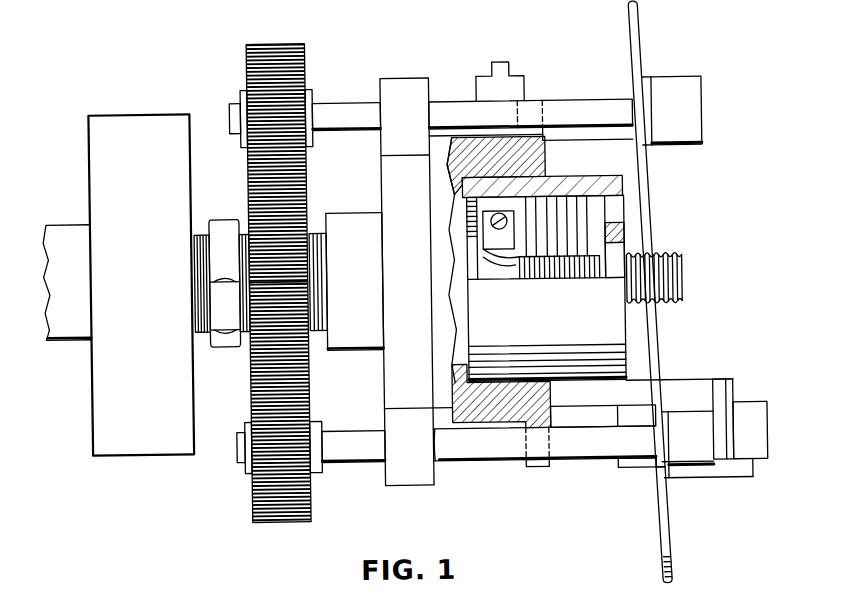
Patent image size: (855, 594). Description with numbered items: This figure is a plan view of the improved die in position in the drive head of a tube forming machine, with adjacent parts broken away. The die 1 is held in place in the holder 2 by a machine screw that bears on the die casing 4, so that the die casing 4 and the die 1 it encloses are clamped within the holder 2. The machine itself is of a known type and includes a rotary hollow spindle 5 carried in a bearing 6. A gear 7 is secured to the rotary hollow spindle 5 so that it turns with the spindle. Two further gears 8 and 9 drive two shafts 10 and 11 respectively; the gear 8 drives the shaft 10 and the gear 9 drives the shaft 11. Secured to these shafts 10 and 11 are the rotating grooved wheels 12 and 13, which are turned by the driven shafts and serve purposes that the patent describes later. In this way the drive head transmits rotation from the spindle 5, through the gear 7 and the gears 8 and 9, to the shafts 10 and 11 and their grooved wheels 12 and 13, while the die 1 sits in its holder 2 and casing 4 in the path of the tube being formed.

The die 1 is at (559, 206).
The holder 2 is at (499, 152).
The die casing 4 is at (597, 186).
The rotary hollow spindle 5 is at (244, 333).
The bearing 6 is at (165, 444).
The gear 7 is at (301, 339).
The gear 8 is at (296, 477).
The gear 9 is at (298, 81).
The shaft 10 is at (473, 448).
The shaft 11 is at (460, 112).
The rotating grooved wheel 12 is at (667, 541).
The rotating grooved wheel 13 is at (643, 38).